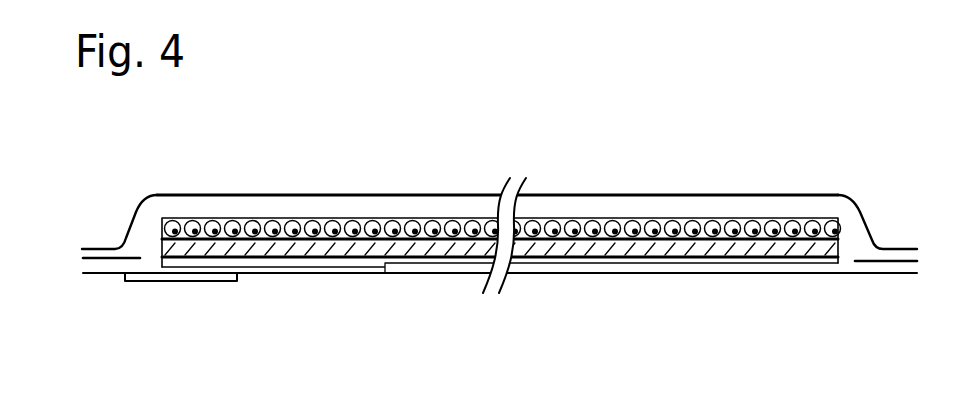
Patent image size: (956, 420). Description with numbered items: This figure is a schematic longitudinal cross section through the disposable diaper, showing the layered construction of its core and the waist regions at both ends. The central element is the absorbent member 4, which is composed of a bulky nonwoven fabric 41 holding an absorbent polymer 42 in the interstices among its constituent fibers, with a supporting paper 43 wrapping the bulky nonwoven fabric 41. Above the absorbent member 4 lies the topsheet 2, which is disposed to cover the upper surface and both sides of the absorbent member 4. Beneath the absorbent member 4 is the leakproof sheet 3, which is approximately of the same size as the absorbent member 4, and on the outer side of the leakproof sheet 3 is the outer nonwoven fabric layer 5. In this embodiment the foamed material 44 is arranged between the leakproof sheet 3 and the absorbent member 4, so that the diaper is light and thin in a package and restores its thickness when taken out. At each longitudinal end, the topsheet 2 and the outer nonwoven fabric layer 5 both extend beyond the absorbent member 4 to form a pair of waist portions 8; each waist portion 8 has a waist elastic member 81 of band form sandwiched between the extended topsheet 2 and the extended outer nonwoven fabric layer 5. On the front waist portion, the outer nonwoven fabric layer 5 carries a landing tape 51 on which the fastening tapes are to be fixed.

The topsheet 2 is at (123, 238).
The leakproof sheet 3 is at (384, 274).
The absorbent member 4 is at (501, 307).
The bulky nonwoven fabric 41 is at (568, 240).
The absorbent polymer 42 is at (598, 237).
The supporting paper 43 is at (668, 245).
The foamed material 44 is at (548, 330).
The outer nonwoven fabric layer 5 is at (323, 274).
The landing tape 51 is at (197, 282).
The waist portion 8 is at (505, 324).
The waist elastic member 81 is at (103, 260).